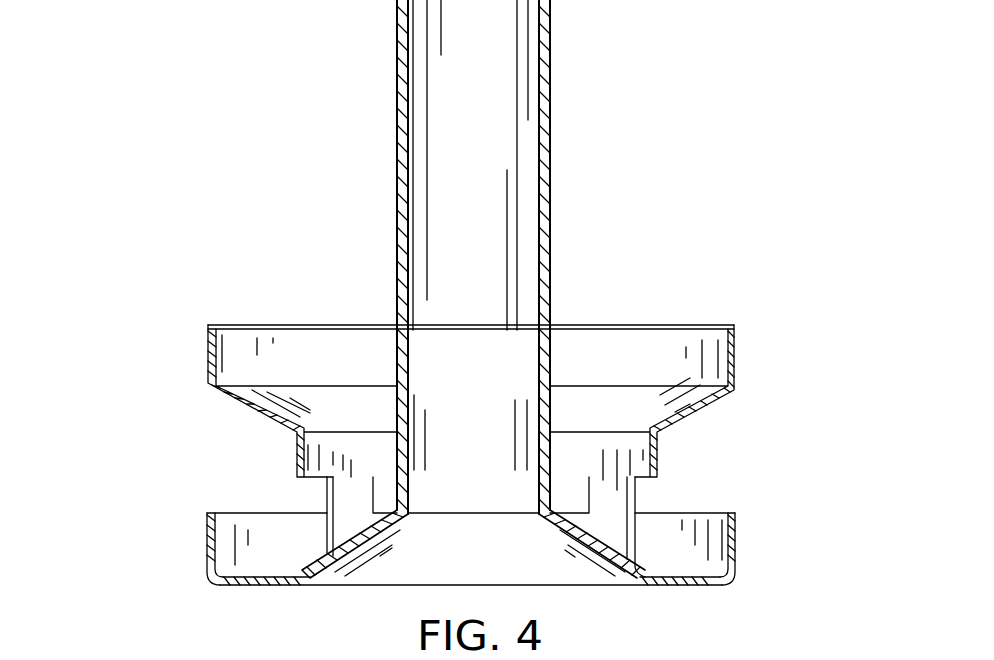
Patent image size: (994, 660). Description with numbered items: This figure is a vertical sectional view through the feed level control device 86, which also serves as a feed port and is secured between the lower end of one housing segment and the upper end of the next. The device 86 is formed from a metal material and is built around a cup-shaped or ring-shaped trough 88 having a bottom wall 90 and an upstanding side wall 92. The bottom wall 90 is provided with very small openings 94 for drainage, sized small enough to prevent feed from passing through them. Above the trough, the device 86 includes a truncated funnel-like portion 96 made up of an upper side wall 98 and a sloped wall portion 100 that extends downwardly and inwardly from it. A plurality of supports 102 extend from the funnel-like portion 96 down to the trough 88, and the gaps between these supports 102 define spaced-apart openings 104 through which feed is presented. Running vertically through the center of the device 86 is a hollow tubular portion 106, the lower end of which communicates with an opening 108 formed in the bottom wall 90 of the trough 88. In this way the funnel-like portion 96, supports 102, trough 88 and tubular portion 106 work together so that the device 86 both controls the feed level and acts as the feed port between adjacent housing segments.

The feed level control device 86 is at (676, 294).
The trough 88 is at (186, 539).
The bottom wall 90 is at (243, 576).
The side wall 92 is at (736, 549).
The openings 94 is at (258, 582).
The truncated funnel-like portion 96 is at (738, 326).
The upper side wall 98 is at (735, 358).
The sloped wall portion 100 is at (658, 432).
The supports 102 is at (618, 497).
The openings 104 is at (382, 493).
The hollow tubular portion 106 is at (553, 183).
The opening 108 is at (402, 573).